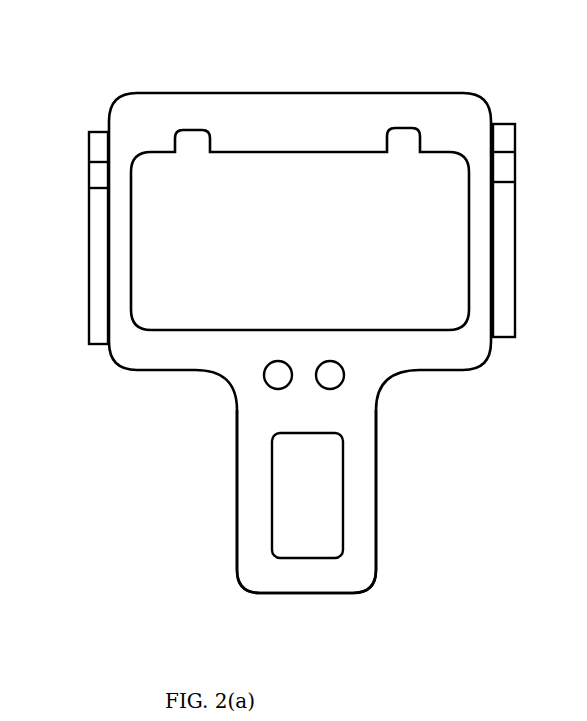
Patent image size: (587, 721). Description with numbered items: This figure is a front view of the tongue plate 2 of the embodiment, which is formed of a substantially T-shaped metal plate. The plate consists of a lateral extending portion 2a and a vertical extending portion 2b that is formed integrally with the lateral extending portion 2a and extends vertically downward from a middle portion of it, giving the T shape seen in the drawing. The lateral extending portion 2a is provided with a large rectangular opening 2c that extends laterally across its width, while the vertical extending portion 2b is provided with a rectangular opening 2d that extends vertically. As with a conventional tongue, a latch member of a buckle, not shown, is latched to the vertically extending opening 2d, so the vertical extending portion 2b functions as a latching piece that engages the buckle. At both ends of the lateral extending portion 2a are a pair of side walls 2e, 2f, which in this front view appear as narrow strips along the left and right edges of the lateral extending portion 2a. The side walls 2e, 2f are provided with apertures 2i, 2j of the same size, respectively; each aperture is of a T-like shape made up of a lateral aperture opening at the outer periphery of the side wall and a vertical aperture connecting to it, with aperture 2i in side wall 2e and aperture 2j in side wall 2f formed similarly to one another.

The tongue plate 2 is at (298, 310).
The lateral extending portion 2a is at (310, 113).
The vertical extending portion 2b is at (363, 513).
The large rectangular opening 2c is at (322, 282).
The rectangular opening 2d is at (327, 533).
The side wall 2e is at (506, 254).
The side wall 2f is at (90, 233).
The aperture 2i is at (500, 170).
The aperture 2j is at (96, 178).